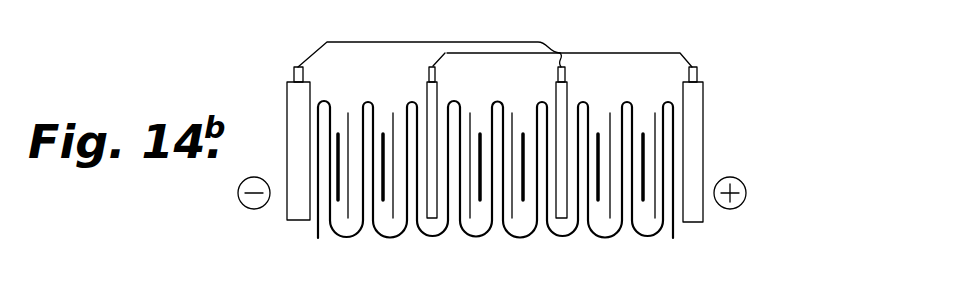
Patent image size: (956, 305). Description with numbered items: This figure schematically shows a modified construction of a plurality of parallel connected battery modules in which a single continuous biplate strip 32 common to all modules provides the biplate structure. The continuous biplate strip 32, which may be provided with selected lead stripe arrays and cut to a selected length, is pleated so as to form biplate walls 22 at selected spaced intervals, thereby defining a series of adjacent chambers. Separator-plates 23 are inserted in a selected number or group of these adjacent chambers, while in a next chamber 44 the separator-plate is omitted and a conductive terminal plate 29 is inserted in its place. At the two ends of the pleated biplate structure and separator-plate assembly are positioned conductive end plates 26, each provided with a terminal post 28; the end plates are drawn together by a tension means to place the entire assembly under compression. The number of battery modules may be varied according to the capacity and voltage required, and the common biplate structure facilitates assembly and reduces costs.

The biplate walls 22 is at (364, 98).
The separator-plates 23 is at (387, 107).
The conductive end plates 26 is at (296, 207).
The terminal posts 28 is at (293, 70).
The conductive terminal plate 29 is at (433, 218).
The continuous biplate strip 32 is at (517, 238).
The chamber 44 is at (423, 178).